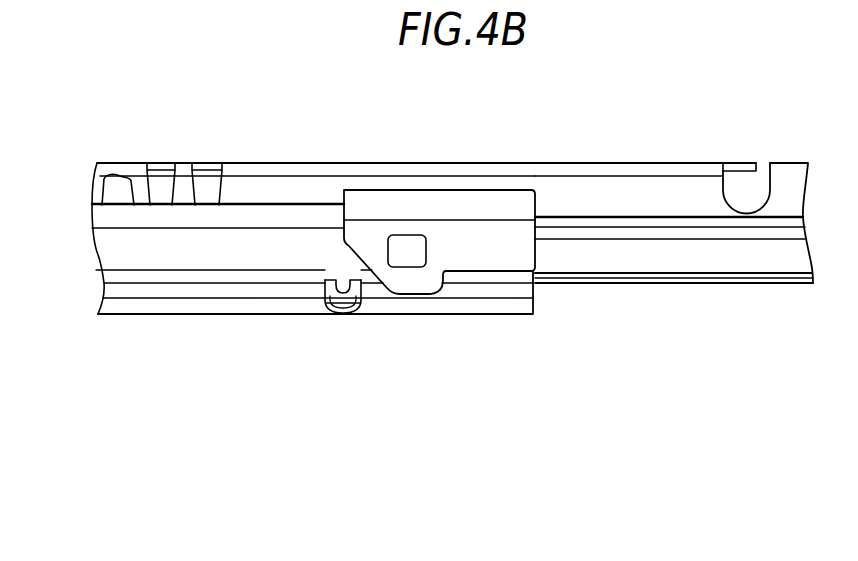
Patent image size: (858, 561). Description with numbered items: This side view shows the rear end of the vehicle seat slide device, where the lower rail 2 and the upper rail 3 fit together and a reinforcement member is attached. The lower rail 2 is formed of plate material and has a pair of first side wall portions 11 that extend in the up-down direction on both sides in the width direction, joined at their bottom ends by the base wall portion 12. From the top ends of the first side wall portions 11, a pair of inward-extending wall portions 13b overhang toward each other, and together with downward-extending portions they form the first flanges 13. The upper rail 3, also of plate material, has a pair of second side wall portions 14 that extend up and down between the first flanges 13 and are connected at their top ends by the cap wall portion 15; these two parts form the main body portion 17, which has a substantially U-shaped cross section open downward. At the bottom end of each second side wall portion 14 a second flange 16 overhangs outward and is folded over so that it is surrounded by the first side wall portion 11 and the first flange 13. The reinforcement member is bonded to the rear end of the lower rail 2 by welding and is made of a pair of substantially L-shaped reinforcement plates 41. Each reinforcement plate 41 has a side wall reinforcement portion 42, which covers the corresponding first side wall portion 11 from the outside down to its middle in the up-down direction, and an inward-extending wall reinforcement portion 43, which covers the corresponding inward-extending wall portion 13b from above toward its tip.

The lower rail 2 is at (485, 152).
The upper rail 3 is at (684, 162).
The first side wall portions 11 is at (294, 257).
The base wall portion 12 is at (317, 315).
The first flanges 13 is at (252, 142).
The inward-extending wall portions 13b is at (327, 197).
The second side wall portions 14 is at (648, 203).
The cap wall portion 15 is at (602, 162).
The second flange 16 is at (595, 257).
The main body portion 17 is at (640, 195).
The reinforcement plates 41 is at (528, 190).
The side wall reinforcement portion 42 is at (458, 260).
The inward-extending wall reinforcement portion 43 is at (408, 190).